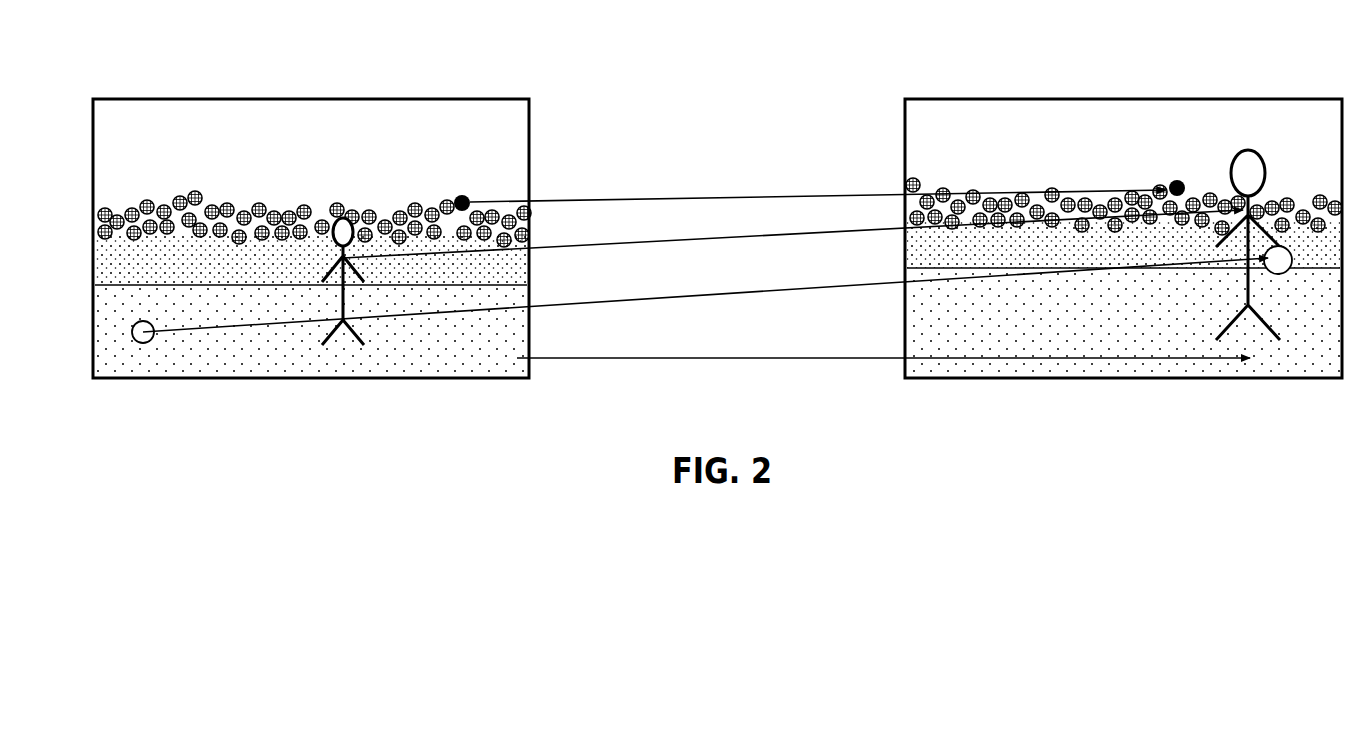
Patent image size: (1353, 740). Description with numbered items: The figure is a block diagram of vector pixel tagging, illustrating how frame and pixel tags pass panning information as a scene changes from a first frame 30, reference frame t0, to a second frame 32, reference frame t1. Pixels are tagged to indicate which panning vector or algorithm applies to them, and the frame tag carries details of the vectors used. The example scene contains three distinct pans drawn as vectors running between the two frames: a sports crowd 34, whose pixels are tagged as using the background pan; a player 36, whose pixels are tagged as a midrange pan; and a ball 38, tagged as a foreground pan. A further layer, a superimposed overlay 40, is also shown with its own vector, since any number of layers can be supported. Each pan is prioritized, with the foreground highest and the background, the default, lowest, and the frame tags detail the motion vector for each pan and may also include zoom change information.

The first frame 30 is at (147, 97).
The second frame 32 is at (945, 97).
The sports crowd 34 is at (842, 197).
The player 36 is at (818, 236).
The ball 38 is at (818, 288).
The superimposed overlay 40 is at (810, 358).